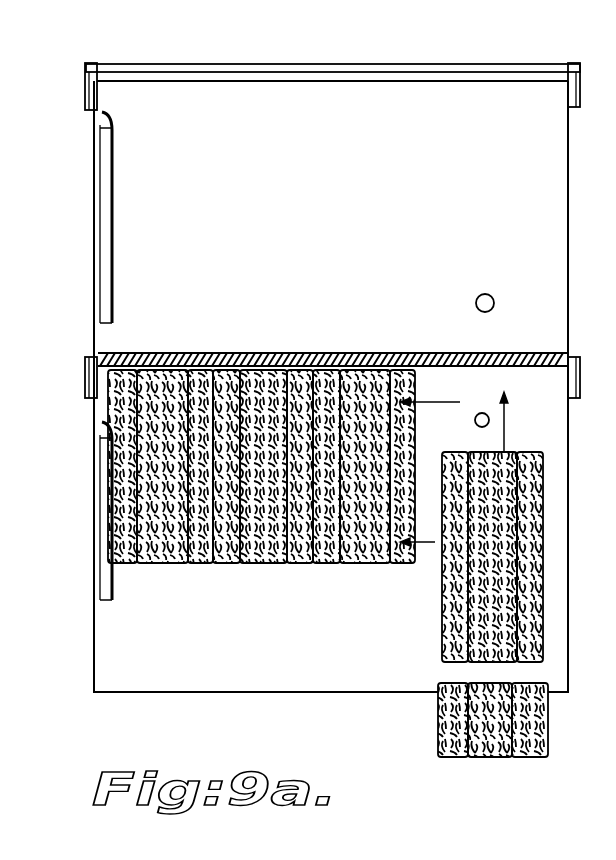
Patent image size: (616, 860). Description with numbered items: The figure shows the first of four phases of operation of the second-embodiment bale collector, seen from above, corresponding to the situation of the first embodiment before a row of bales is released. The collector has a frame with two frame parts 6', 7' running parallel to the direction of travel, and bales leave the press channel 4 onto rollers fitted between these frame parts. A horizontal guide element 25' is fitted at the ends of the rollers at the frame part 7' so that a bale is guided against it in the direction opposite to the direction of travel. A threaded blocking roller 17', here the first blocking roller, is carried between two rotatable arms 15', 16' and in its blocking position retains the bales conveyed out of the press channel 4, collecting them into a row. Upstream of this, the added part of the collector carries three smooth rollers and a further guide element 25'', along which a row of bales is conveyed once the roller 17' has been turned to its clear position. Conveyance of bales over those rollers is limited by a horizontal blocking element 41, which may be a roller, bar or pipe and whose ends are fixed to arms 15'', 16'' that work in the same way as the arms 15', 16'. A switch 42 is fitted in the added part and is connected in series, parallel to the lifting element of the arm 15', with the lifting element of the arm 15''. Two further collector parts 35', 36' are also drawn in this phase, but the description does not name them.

The horizontal blocking element 41 is at (310, 64).
The arm 16'' is at (59, 86).
The arm 15'' is at (592, 85).
The guide element 25'' is at (75, 217).
The horizontal guide element 25' is at (71, 511).
The switch 42 is at (477, 296).
The blocking roller 17' is at (333, 342).
The arm 16' is at (66, 377).
The arm 15' is at (592, 386).
The filter element 35' is at (261, 440).
The opening 36' is at (458, 430).
The frame part 6' is at (525, 557).
The frame part 7' is at (306, 386).
The press channel 4 is at (548, 735).